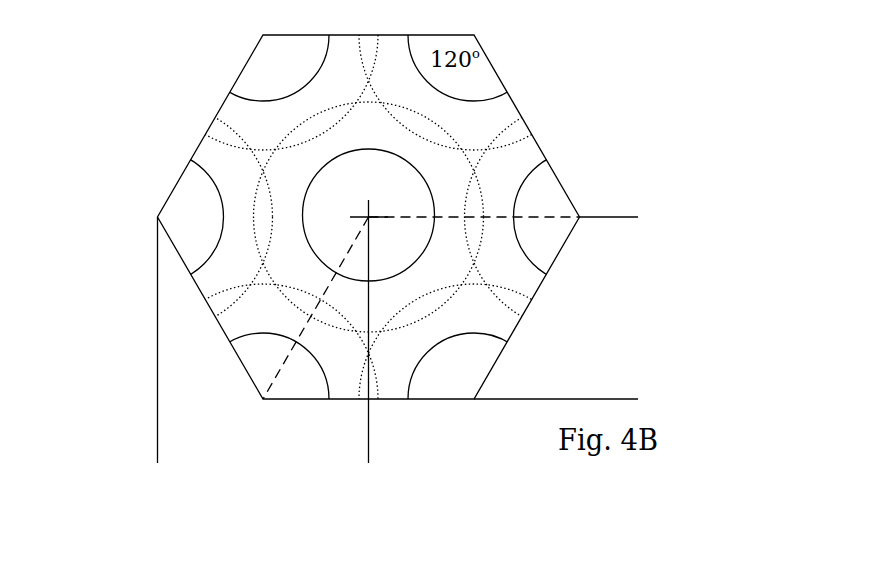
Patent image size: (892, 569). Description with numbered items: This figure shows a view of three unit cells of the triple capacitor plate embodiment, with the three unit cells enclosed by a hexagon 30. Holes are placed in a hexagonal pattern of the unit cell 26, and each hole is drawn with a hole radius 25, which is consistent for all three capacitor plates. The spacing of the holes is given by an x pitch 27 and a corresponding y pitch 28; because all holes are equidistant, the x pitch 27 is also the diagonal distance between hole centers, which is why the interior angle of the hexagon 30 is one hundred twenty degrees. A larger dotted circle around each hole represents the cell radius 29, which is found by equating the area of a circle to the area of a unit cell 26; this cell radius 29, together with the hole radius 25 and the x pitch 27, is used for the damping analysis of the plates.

The hole radius 25 is at (263, 35).
The unit cell 26 is at (538, 215).
The x pitch 27 is at (368, 452).
The y pitch 28 is at (627, 217).
The cell radius 29 is at (438, 125).
The hexagon 30 is at (226, 98).